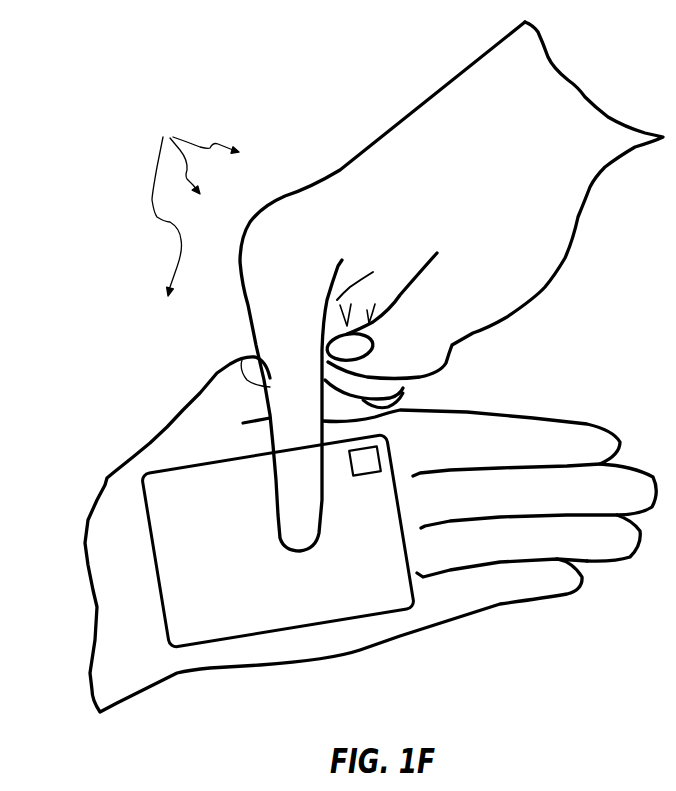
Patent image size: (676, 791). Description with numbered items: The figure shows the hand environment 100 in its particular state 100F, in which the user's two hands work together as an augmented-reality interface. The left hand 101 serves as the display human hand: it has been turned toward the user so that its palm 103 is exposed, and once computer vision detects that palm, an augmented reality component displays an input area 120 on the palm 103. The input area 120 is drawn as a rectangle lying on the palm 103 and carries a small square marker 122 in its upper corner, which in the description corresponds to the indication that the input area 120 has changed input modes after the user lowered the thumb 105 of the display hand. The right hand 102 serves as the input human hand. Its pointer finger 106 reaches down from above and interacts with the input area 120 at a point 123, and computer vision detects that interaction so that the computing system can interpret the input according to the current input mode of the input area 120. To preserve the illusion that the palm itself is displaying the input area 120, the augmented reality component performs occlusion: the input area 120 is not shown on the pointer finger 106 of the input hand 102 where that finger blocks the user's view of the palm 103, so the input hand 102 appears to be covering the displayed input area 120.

The hand environment 100 is at (101, 90).
The state 100F is at (194, 205).
The left hand 101 is at (122, 461).
The right hand 102 is at (441, 100).
The palm 103 is at (202, 458).
The thumb 105 is at (403, 400).
The pointer finger 106 is at (242, 360).
The input area 120 is at (155, 558).
The chip 122 is at (360, 468).
The point 123 is at (293, 550).